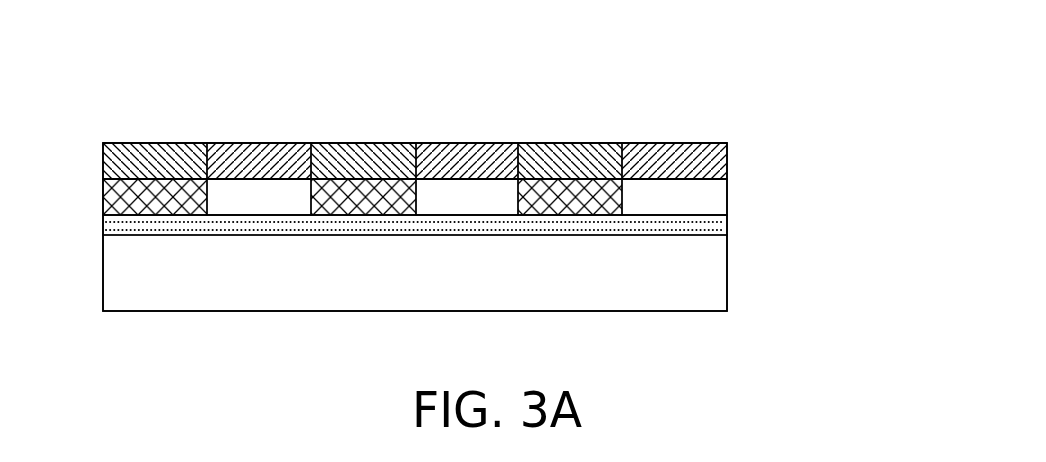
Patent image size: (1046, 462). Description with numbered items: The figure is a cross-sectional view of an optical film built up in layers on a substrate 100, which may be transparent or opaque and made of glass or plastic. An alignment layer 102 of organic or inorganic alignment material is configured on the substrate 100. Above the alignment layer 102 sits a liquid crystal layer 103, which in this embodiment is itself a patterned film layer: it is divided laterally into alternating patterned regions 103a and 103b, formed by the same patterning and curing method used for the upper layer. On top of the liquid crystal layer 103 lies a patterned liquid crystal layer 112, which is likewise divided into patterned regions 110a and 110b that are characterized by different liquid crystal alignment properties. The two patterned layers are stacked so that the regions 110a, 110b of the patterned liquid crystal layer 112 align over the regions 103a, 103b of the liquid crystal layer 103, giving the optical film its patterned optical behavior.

The substrate 100 is at (710, 290).
The alignment layer 102 is at (718, 221).
The liquid crystal layer 103 is at (818, 125).
The patterned region 103a is at (613, 188).
The patterned region 103b is at (683, 202).
The patterned region 110a is at (582, 142).
The patterned region 110b is at (678, 142).
The patterned liquid crystal layer 112 is at (807, 23).